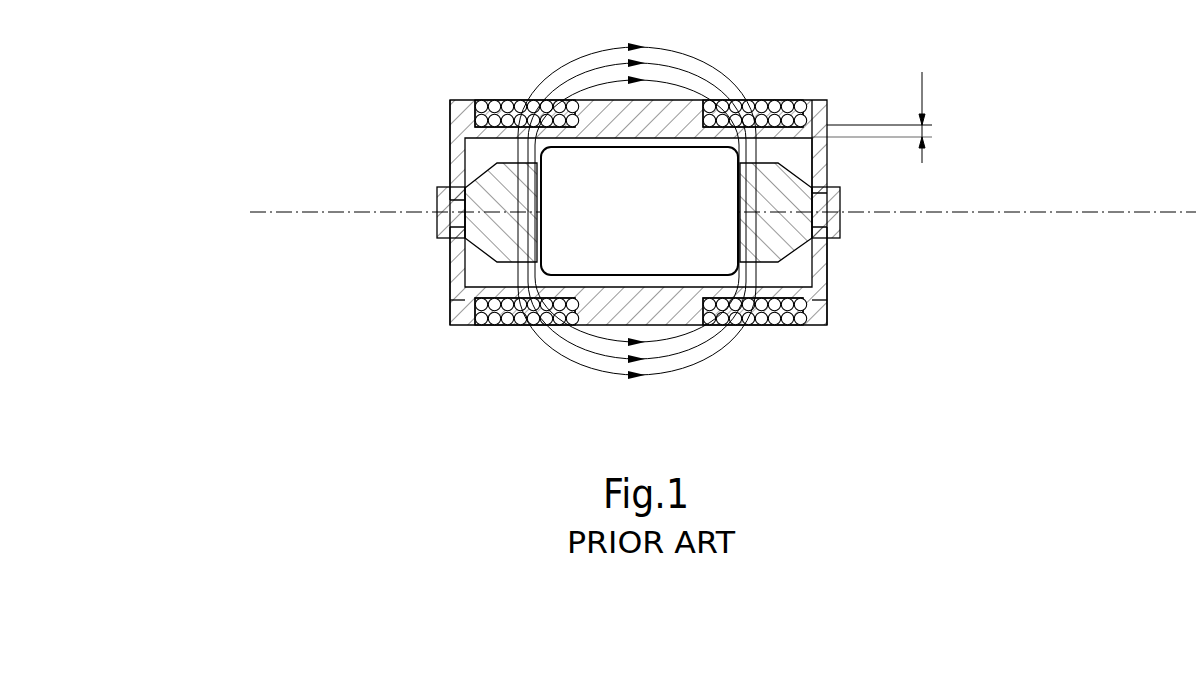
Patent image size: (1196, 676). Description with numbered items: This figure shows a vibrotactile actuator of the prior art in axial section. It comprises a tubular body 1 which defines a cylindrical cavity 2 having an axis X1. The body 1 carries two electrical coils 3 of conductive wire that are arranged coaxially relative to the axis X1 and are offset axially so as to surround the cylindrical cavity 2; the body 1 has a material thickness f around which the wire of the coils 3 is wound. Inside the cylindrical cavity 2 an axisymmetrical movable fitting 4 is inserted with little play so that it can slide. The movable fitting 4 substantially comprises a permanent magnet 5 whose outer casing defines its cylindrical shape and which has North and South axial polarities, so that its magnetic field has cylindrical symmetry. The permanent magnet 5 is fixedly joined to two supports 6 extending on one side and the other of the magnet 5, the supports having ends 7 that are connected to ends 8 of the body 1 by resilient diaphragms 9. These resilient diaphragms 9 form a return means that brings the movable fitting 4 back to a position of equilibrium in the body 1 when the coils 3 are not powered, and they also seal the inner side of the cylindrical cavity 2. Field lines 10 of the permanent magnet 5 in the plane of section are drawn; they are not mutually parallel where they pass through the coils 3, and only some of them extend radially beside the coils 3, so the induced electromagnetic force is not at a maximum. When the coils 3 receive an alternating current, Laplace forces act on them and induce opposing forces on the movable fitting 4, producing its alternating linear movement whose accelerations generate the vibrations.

The tubular body 1 is at (851, 78).
The cylindrical cavity 2 is at (812, 150).
The electrical coils 3 is at (493, 100).
The movable fitting 4 is at (477, 257).
The permanent magnet 5 is at (612, 262).
The supports 6 is at (462, 166).
The ends of the supports 7 is at (437, 230).
The ends of the body 8 is at (463, 328).
The resilient diaphragms 9 is at (449, 258).
The field lines 10 is at (681, 372).
The axis X1 is at (723, 197).